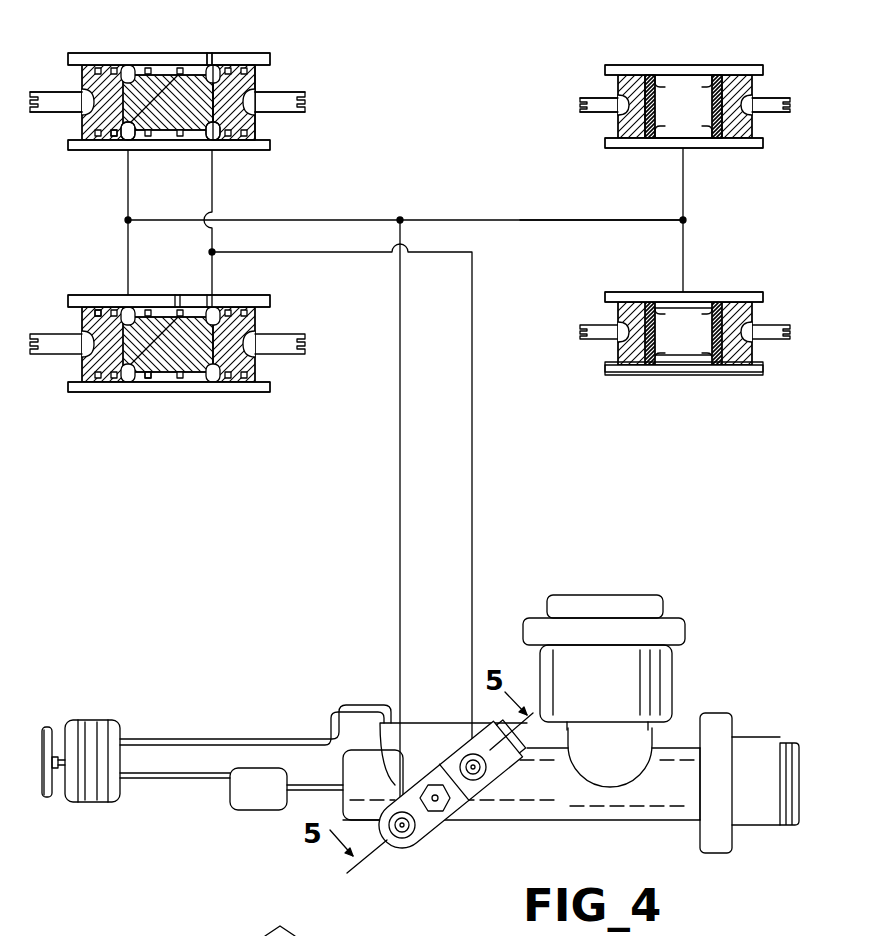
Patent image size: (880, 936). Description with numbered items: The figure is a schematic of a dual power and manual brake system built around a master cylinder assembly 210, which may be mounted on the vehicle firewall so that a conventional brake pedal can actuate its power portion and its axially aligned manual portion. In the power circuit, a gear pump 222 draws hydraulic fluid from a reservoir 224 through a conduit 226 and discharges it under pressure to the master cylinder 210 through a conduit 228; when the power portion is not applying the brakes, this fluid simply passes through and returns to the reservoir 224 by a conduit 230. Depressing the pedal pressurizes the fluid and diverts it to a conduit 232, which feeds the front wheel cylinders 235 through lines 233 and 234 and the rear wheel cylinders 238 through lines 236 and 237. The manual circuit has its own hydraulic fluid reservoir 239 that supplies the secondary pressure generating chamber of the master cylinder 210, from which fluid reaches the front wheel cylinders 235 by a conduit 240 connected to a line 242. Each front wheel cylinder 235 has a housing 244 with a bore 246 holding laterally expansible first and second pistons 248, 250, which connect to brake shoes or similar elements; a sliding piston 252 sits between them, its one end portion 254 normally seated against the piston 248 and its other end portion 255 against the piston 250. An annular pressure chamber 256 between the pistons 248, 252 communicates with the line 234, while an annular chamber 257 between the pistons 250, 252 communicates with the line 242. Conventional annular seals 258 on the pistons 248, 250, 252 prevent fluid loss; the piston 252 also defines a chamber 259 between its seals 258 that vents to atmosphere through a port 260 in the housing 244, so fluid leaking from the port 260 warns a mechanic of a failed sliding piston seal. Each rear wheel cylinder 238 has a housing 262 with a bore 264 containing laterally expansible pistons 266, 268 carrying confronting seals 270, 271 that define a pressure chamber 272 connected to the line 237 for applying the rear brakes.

The master cylinder assembly 210 is at (571, 724).
The gear pump 222 is at (108, 722).
The reservoir 224 is at (280, 801).
The conduit 226 is at (182, 780).
The conduit 228 is at (205, 740).
The conduit 230 is at (316, 785).
The conduit 232 is at (399, 480).
The line 233 is at (350, 218).
The line 234 is at (127, 219).
The front wheel cylinder 235 is at (173, 225).
The line 236 is at (552, 218).
The line 237 is at (686, 208).
The rear wheel cylinder 238 is at (684, 223).
The hydraulic fluid reservoir 239 is at (617, 686).
The conduit 240 is at (474, 470).
The line 242 is at (215, 206).
The housing 244 is at (90, 52).
The bore 246 is at (188, 151).
The first piston 248 is at (82, 127).
The second piston 250 is at (258, 125).
The sliding piston 252 is at (158, 66).
The end portion 254 is at (122, 130).
The end portion 255 is at (222, 92).
The annular pressure chamber 256 is at (130, 136).
The annular chamber 257 is at (213, 139).
The annular seals 258 is at (101, 306).
The chamber 259 is at (158, 382).
The port 260 is at (182, 287).
The housing 262 is at (636, 292).
The bore 264 is at (692, 305).
The piston 266 is at (620, 125).
The piston 268 is at (752, 125).
The seal 270 is at (652, 73).
The seal 271 is at (718, 73).
The pressure chamber 272 is at (677, 139).